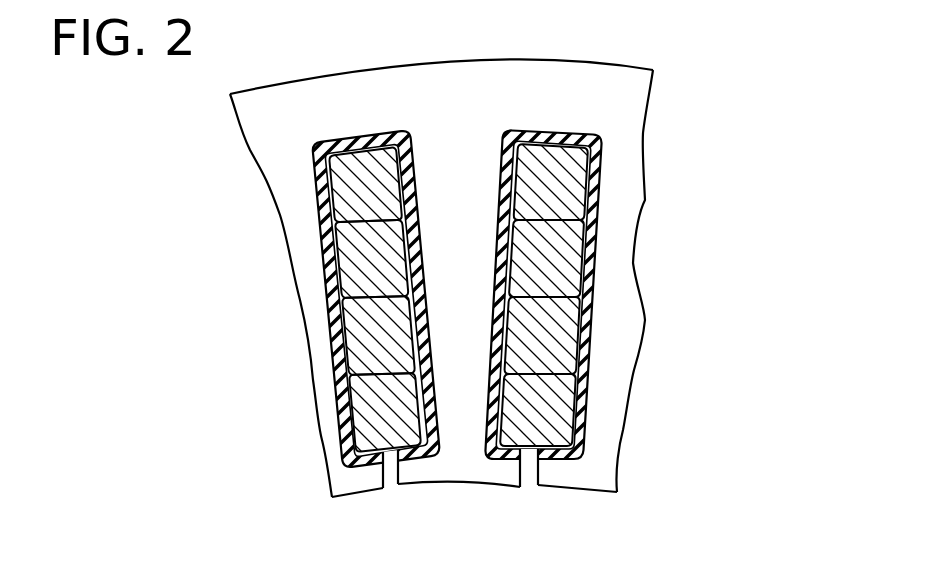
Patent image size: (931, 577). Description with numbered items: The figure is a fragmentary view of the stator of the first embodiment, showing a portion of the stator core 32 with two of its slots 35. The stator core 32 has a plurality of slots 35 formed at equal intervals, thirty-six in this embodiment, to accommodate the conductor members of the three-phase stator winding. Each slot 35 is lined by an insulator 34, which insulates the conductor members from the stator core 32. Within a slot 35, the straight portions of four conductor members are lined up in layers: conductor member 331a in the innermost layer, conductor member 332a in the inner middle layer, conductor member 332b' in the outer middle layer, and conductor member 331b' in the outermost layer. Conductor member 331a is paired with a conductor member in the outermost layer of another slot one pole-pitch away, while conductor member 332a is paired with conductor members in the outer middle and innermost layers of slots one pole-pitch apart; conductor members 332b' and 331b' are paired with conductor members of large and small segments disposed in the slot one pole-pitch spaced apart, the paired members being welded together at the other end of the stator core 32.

The stator core 32 is at (438, 82).
The insulator 34 is at (598, 140).
The conductor member 331a is at (542, 410).
The conductor member 331b' is at (639, 182).
The conductor member 332a is at (547, 340).
The conductor member 332b' is at (636, 258).
The slot 35 is at (532, 460).